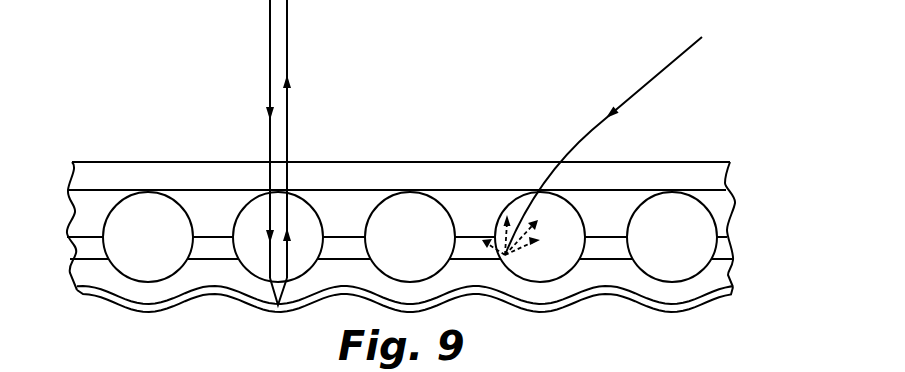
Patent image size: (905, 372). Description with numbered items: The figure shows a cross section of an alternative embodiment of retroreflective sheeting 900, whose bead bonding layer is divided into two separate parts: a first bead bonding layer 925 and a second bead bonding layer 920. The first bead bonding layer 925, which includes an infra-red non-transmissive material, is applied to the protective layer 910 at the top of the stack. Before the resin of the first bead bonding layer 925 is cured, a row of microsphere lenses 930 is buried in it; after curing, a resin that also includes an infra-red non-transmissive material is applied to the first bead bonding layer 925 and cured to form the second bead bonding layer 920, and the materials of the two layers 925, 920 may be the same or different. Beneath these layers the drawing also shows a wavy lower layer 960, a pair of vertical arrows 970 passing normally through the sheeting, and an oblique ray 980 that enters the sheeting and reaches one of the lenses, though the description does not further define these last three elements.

The retroreflective sheeting 900 is at (702, 96).
The protective layer 910 is at (717, 175).
The second bead bonding layer 920 is at (725, 248).
The first bead bonding layer 925 is at (720, 212).
The microsphere lenses 930 is at (672, 212).
The substrate / backing layer 960 is at (715, 295).
The normal incident light ray 970 is at (270, 50).
The oblique incident light ray 980 is at (660, 72).